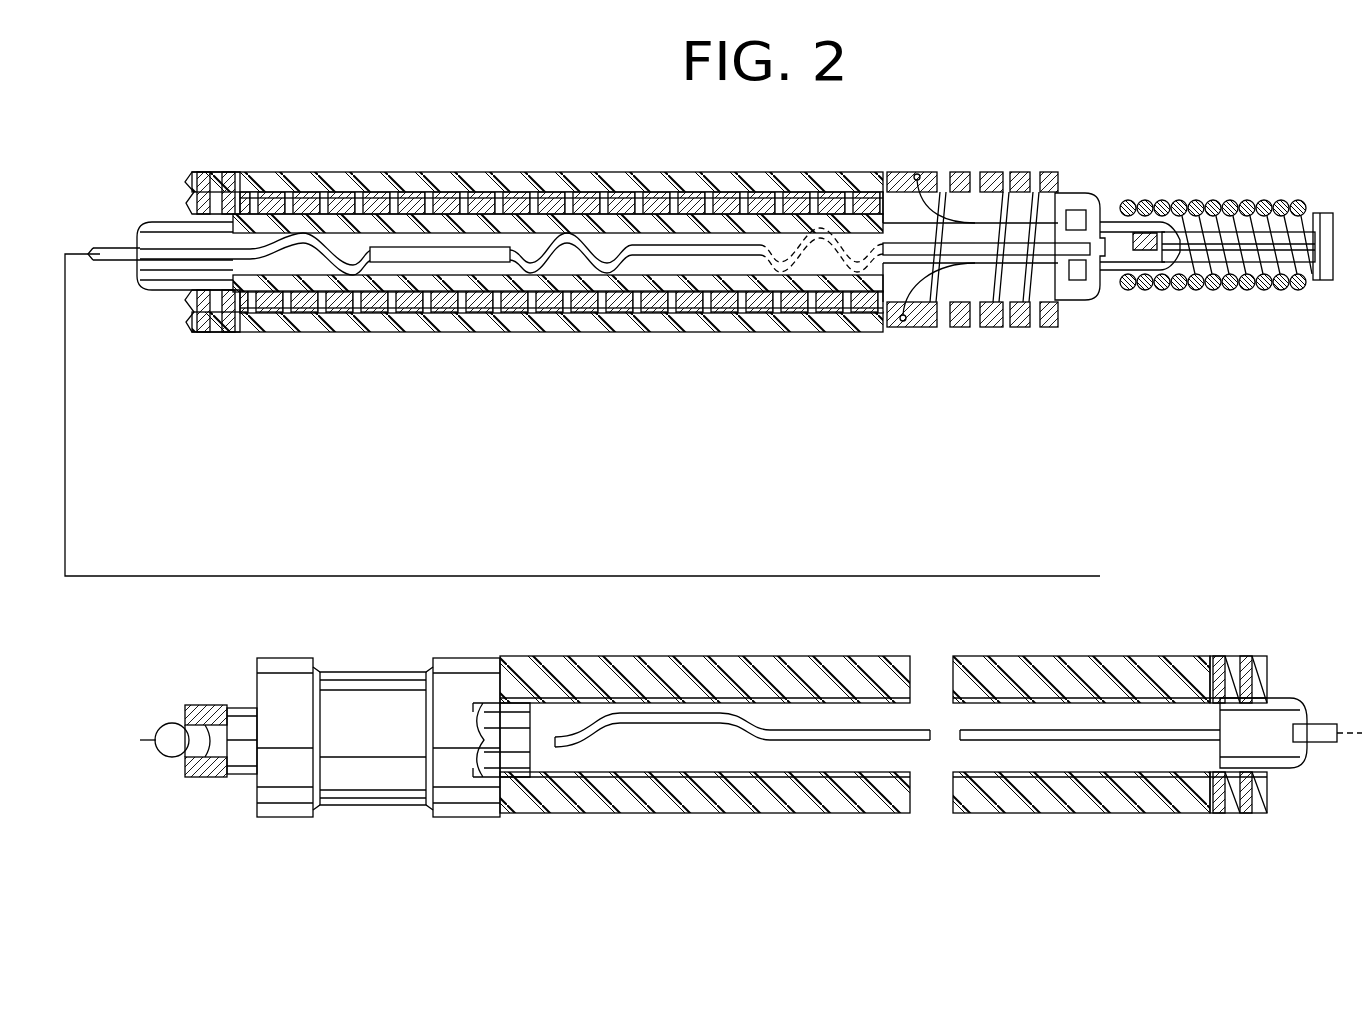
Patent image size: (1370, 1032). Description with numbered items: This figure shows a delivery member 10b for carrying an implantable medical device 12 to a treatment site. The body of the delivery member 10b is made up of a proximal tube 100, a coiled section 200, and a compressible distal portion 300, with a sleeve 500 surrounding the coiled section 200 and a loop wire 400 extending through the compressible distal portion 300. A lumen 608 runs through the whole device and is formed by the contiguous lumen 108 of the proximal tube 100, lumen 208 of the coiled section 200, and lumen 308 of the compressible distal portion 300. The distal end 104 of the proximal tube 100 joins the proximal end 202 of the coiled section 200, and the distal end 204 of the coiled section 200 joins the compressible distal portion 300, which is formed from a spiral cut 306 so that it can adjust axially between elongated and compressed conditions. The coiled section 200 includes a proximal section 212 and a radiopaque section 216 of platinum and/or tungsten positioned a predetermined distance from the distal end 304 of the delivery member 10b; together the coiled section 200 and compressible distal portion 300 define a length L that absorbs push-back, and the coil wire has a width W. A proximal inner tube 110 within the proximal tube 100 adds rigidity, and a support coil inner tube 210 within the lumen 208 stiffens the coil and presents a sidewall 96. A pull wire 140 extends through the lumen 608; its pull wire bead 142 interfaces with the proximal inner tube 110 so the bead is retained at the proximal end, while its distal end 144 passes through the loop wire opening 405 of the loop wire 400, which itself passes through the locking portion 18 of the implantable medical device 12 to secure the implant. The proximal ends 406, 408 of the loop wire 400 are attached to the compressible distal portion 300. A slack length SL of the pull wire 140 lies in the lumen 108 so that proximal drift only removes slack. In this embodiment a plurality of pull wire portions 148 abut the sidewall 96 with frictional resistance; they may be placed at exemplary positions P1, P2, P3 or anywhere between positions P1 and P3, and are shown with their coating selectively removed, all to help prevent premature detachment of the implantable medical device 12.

The distal end of proximal tube 104 is at (203, 172).
The coiled section 200 is at (230, 172).
The position P1 is at (307, 172).
The proximal section 212 is at (338, 172).
The pull wire 140 is at (400, 247).
The lumen of coiled section 208 is at (455, 210).
The position P2 is at (555, 235).
The sidewall 96 is at (612, 205).
The width W is at (740, 140).
The lumen 608 is at (775, 212).
The position P3 is at (822, 168).
The distal end of coiled section 204 is at (893, 172).
The proximal end of loop wire 406 is at (918, 175).
The loop wire 400 is at (1008, 188).
The distal end of delivery member 304 is at (1068, 195).
The loop wire opening 405 is at (1100, 215).
The locking portion 18 is at (1180, 230).
The implantable medical device 12 is at (1265, 200).
The distal end of pull wire 144 is at (1158, 276).
The spiral cut 306 is at (1062, 300).
The lumen of compressible distal portion 308 is at (975, 300).
The proximal end of loop wire 408 is at (903, 321).
The compressible distal portion 300 is at (945, 328).
The pull wire portion 148 is at (360, 275).
The radiopaque section 216 is at (805, 375).
The sleeve 500 is at (605, 332).
The support coil inner tube 210 is at (440, 275).
The proximal end of coiled section 202 is at (262, 332).
The length L is at (1053, 497).
The delivery member 10b is at (1053, 488).
The proximal inner tube 110 is at (226, 705).
The pull wire bead 142 is at (155, 740).
The slack length SL is at (640, 713).
The proximal tube 100 is at (548, 760).
The lumen of proximal tube 108 is at (775, 762).